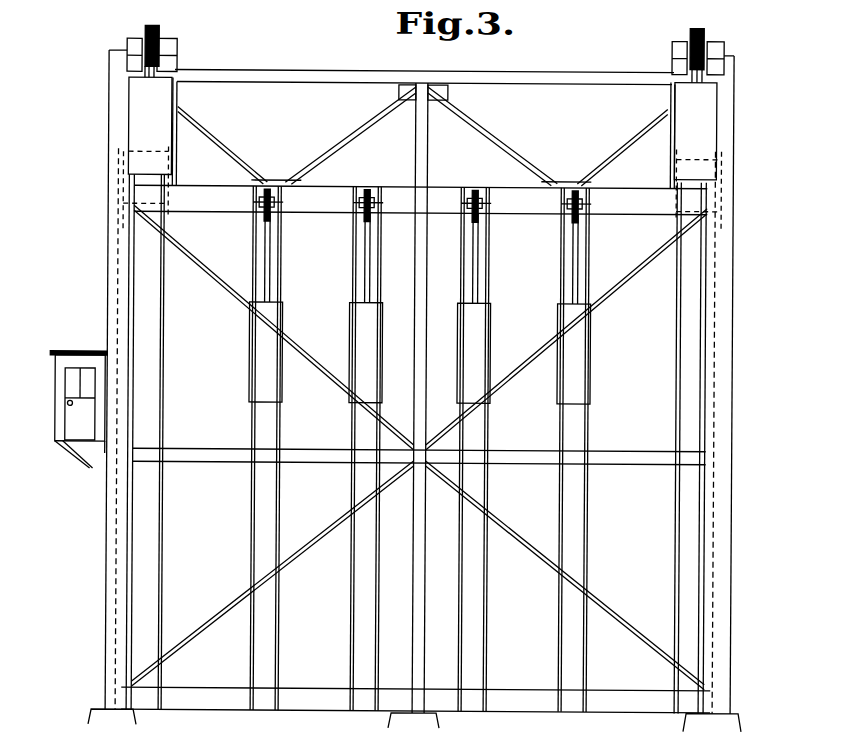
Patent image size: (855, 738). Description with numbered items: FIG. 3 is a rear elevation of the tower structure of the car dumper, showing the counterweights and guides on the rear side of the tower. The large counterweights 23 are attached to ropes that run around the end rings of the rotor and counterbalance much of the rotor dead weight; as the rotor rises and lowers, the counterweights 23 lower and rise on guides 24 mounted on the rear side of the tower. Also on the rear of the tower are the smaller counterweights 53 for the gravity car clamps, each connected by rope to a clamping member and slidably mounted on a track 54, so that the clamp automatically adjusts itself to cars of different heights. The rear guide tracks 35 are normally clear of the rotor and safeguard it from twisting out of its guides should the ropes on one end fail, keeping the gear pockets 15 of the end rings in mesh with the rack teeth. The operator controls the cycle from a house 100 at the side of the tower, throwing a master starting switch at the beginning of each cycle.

The pockets 15 is at (414, 712).
The counterweights 23 is at (127, 106).
The guides 24 is at (158, 268).
The rear guide tracks 35 is at (115, 588).
The counterweight 53 is at (349, 316).
The track 54 is at (352, 610).
The house 100 is at (60, 420).